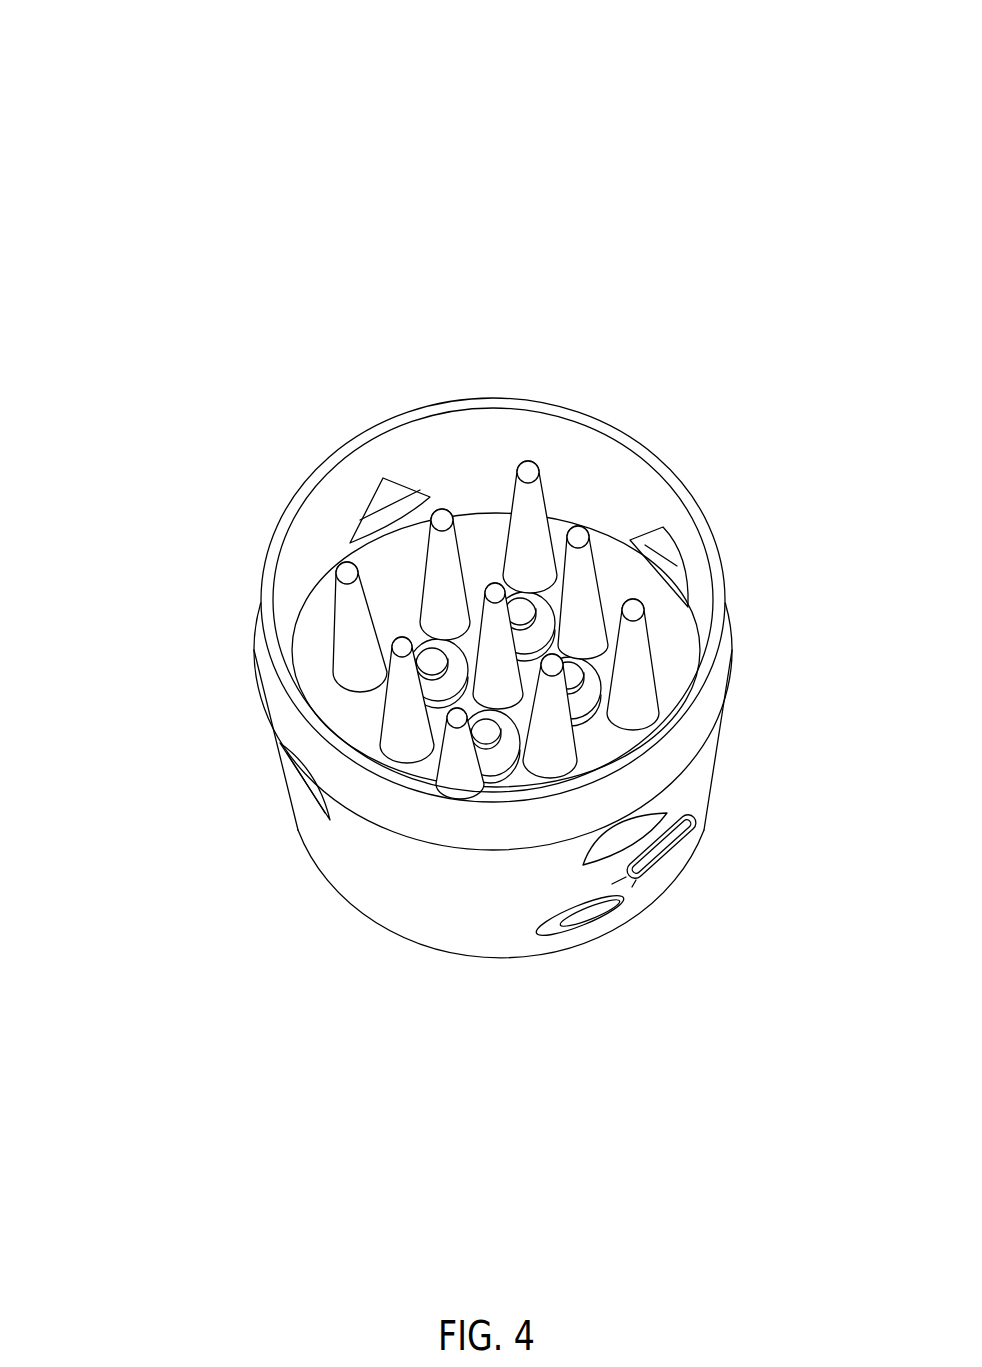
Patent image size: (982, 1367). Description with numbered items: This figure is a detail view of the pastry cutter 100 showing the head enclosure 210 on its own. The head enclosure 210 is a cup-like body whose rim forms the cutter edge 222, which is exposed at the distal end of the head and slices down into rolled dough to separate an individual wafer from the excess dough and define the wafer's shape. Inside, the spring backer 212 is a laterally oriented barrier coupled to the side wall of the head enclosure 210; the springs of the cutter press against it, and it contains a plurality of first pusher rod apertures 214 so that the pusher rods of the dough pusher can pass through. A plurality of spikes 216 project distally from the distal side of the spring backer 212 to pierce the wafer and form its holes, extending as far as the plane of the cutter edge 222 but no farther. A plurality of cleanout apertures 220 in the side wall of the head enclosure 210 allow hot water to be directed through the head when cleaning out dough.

The pastry cutter 100 is at (108, 181).
The head enclosure 210 is at (203, 403).
The spring backer 212 is at (678, 662).
The first pusher rod apertures 214 is at (537, 622).
The spikes 216 is at (545, 750).
The cleanout apertures 220 is at (632, 813).
The cutter edge 222 is at (662, 468).